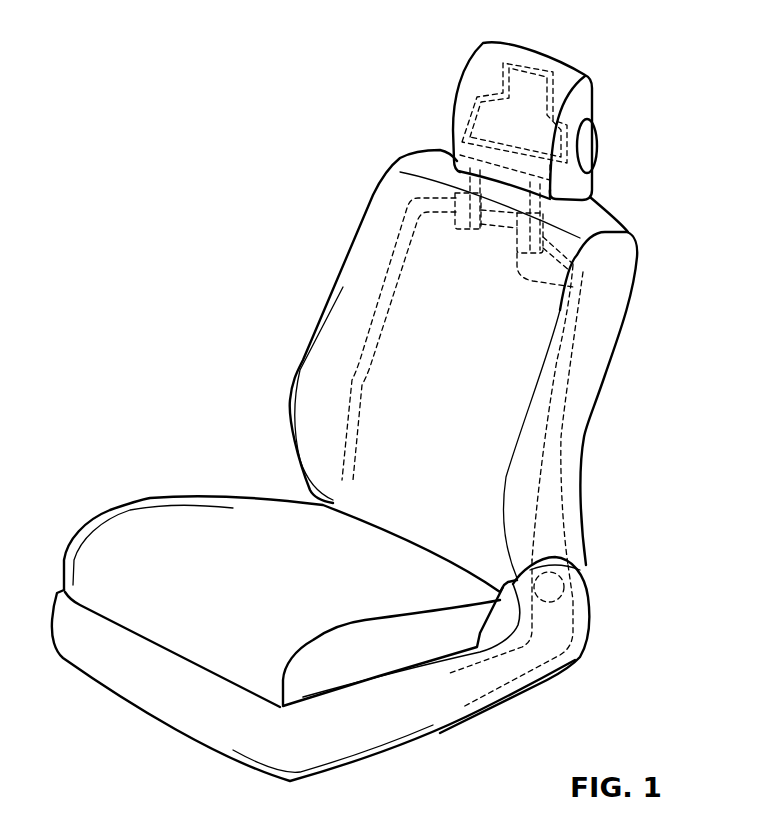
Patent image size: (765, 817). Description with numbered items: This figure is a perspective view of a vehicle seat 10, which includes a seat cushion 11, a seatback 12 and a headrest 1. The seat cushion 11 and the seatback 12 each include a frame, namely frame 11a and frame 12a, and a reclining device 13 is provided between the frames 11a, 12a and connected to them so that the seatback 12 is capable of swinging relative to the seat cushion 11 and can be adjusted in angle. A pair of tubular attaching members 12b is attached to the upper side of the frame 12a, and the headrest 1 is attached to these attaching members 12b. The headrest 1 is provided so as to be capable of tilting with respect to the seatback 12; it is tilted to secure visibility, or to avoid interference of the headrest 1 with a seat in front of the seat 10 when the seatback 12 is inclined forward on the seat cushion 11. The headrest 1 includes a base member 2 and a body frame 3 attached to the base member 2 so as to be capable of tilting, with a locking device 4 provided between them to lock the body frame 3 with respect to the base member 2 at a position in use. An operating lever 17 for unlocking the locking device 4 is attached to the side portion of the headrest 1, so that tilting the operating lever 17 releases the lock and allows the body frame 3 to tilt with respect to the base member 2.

The headrest 1 is at (451, 43).
The base member 2 is at (580, 188).
The body frame 3 is at (582, 99).
The locking device 4 is at (560, 177).
The operating lever 17 is at (598, 140).
The vehicle seat 10 is at (274, 250).
The seat cushion 11 is at (180, 525).
The frame 11a is at (550, 633).
The seatback 12 is at (322, 370).
The frame 12a is at (550, 438).
The tubular attaching members 12b is at (573, 287).
The reclining device 13 is at (560, 580).